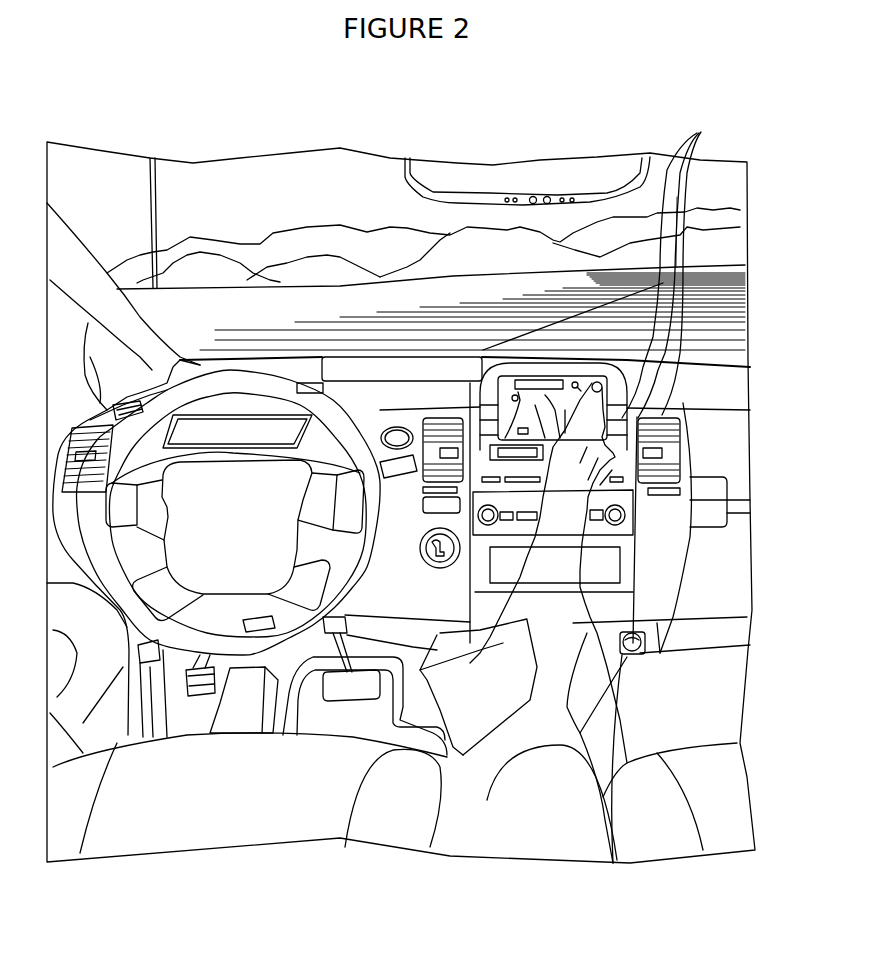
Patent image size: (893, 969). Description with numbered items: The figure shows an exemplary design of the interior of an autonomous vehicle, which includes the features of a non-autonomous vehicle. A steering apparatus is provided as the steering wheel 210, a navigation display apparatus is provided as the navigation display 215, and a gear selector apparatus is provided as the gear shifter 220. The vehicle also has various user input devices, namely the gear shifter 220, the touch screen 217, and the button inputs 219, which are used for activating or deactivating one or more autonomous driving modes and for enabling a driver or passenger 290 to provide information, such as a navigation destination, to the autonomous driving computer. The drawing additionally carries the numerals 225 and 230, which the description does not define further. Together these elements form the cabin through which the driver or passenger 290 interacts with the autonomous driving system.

The steering wheel 210 is at (157, 637).
The navigation display 215 is at (553, 355).
The touch screen 217 is at (640, 655).
The button inputs 219 is at (704, 133).
The gear shifter 220 is at (404, 426).
The steering wheel display 225 is at (235, 420).
The instrument display 230 is at (335, 357).
The driver or passenger 290 is at (530, 700).